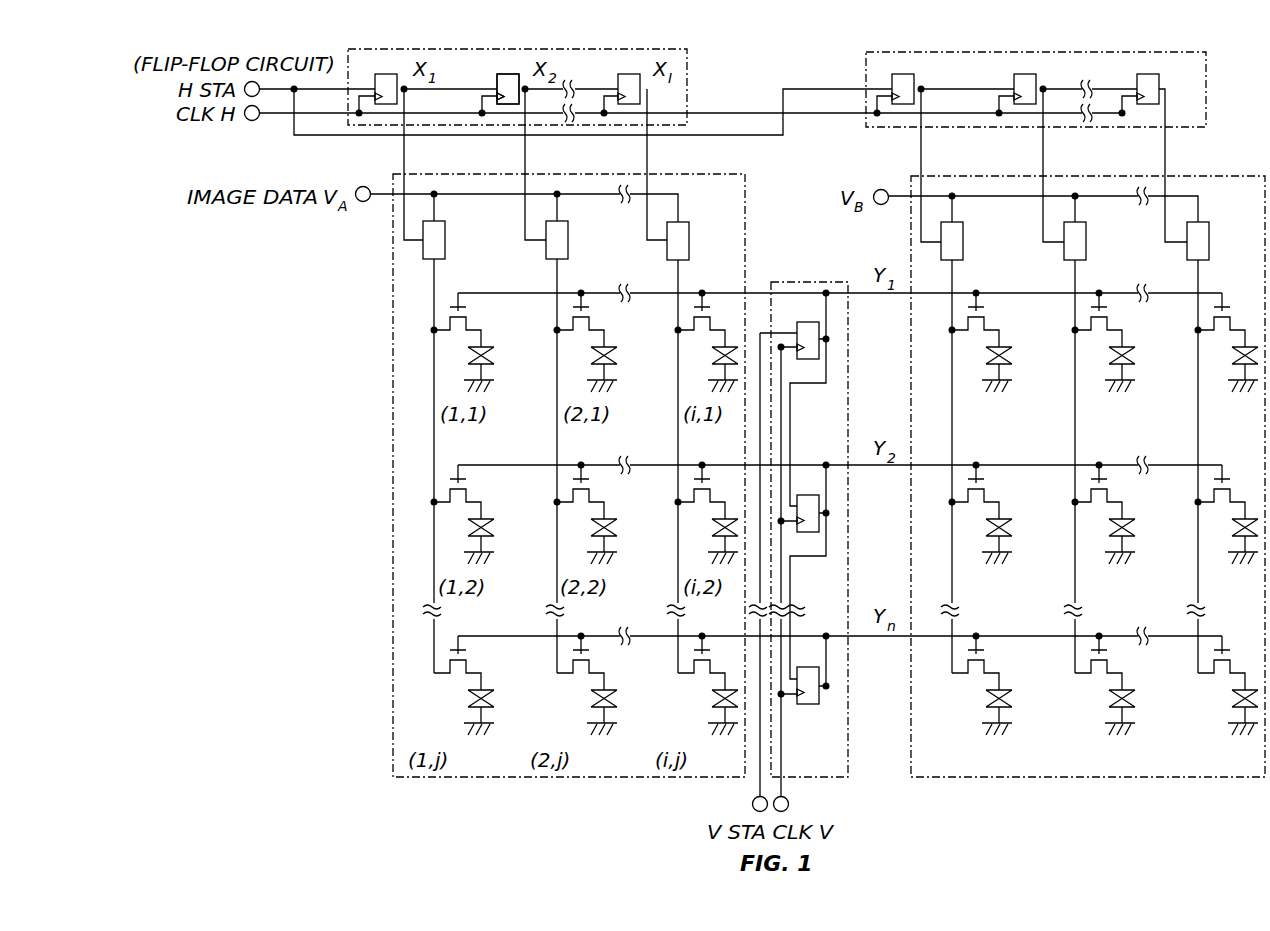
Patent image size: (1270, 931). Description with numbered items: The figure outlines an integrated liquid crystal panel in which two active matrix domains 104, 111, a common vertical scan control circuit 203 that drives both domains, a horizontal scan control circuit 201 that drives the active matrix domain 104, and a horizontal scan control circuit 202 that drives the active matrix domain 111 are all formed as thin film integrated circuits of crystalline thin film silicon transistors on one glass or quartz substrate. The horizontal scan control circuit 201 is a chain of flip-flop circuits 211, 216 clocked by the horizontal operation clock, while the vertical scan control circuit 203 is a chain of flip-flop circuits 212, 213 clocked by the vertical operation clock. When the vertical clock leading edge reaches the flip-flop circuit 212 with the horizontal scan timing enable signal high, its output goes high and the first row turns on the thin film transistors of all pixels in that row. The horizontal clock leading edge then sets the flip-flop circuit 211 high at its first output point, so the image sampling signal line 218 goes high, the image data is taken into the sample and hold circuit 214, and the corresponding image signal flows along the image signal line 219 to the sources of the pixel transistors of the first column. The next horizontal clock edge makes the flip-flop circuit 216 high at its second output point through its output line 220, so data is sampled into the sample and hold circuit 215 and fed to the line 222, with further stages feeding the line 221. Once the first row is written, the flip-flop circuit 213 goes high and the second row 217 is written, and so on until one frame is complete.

The active matrix domain 104 is at (488, 768).
The active matrix domain 111 is at (973, 768).
The horizontal scan control circuit 201 is at (597, 56).
The horizontal scan control circuit 202 is at (1193, 58).
The vertical scan control circuit 203 is at (838, 770).
The flip-flop circuit 211 is at (378, 74).
The flip-flop circuit 212 is at (808, 322).
The flip-flop circuit 213 is at (805, 533).
The sample and hold circuit 214 is at (423, 246).
The sample and hold circuit 215 is at (546, 255).
The flip-flop circuit 216 is at (506, 74).
The scan line Y2 217 is at (866, 468).
The image sampling signal line 218 is at (402, 167).
The image signal line 219 is at (435, 287).
The output line of flip-flop 220 is at (527, 170).
The data line 221 is at (679, 290).
The data line 222 is at (558, 275).